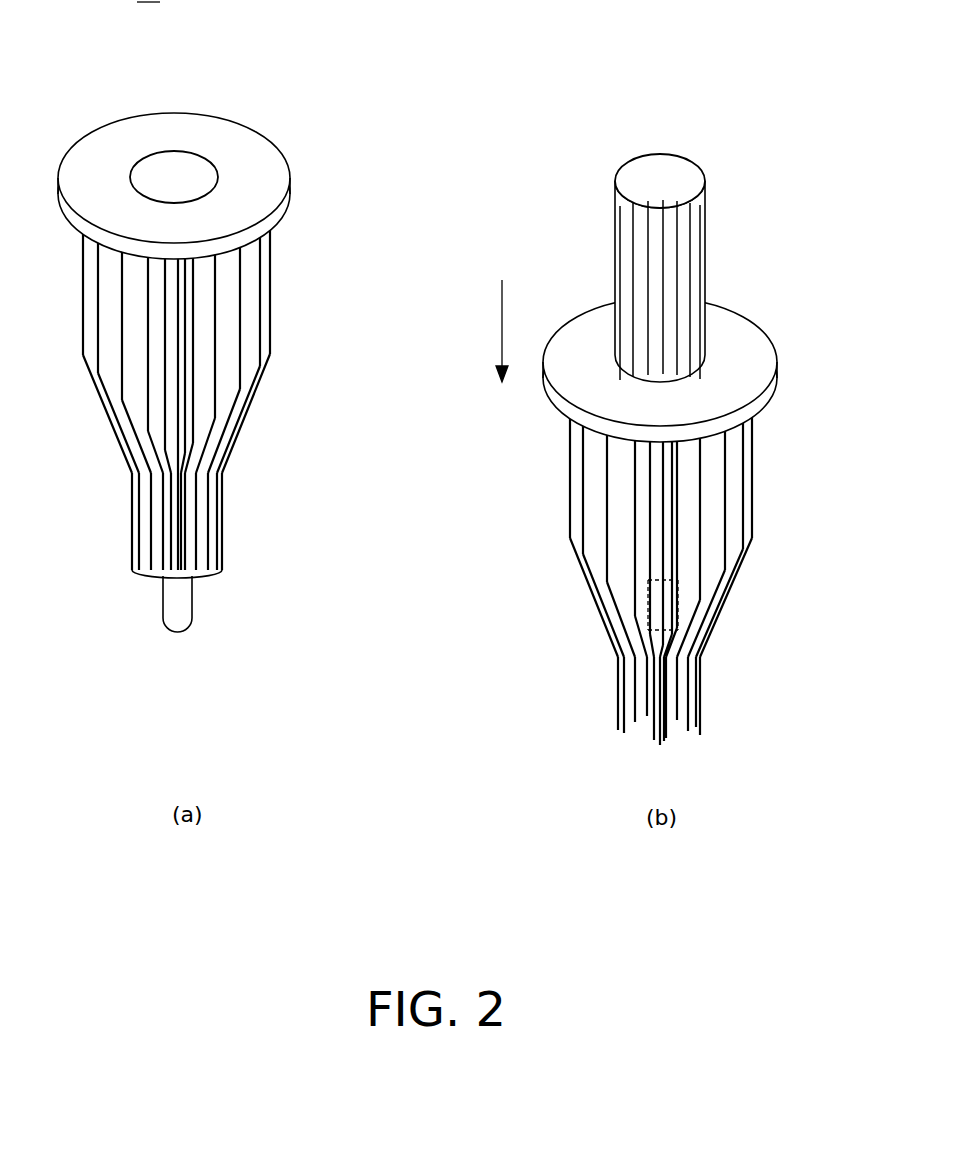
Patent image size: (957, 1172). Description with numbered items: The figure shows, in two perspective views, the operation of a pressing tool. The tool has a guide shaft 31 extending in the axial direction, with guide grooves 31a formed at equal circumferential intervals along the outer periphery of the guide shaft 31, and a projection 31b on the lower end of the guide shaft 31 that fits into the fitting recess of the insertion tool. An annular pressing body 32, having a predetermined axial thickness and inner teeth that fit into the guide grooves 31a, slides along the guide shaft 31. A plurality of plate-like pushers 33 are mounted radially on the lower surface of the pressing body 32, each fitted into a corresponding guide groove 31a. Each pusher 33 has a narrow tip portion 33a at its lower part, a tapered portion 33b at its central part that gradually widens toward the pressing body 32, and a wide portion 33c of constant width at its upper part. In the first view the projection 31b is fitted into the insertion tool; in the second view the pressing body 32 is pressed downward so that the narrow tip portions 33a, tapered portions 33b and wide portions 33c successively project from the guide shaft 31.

The guide shaft 31 is at (200, 177).
The guide grooves 31a is at (700, 212).
The projection 31b is at (190, 618).
The pressing body 32 is at (253, 152).
The pushers 33 is at (477, 469).
The narrow tip portion 33a is at (223, 533).
The tapered portion 33b is at (247, 398).
The wide portion 33c is at (253, 288).